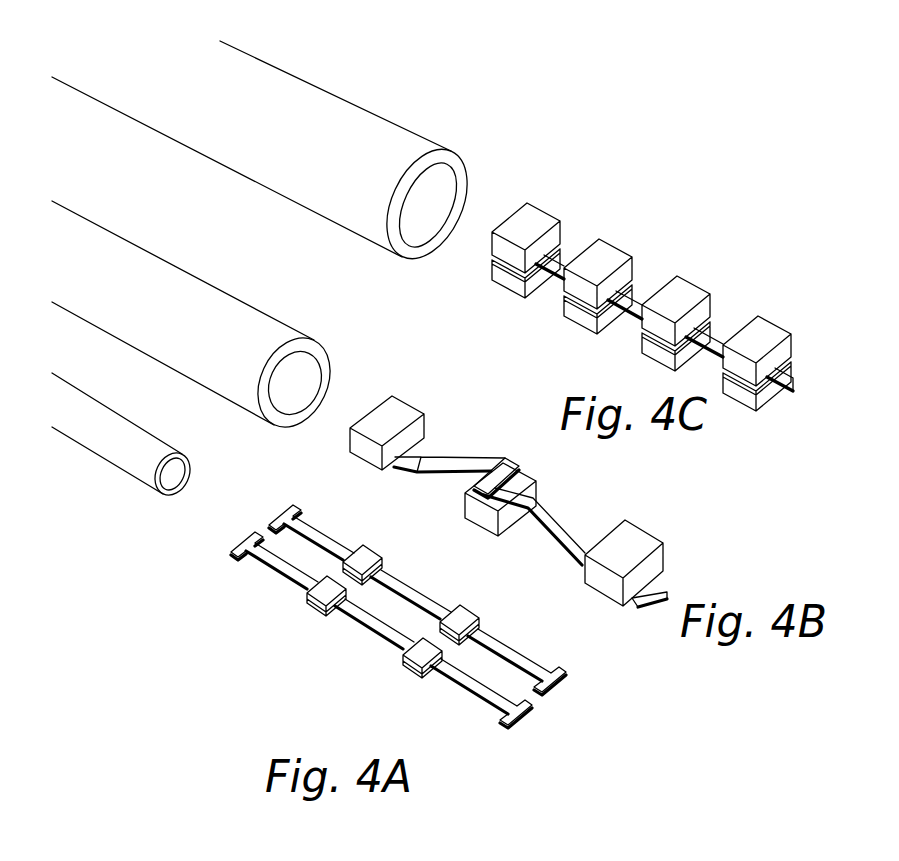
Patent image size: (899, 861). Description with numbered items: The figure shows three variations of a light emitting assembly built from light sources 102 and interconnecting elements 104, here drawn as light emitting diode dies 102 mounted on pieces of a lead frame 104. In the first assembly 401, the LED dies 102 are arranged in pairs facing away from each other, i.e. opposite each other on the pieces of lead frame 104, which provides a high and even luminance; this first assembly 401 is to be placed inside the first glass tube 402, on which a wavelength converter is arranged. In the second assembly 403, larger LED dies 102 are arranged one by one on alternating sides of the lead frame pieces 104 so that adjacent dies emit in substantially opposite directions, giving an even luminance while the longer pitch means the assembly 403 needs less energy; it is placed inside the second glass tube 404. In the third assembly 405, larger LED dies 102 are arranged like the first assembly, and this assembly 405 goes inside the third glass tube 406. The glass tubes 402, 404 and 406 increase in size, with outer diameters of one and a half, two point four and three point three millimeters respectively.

In FIG. 4A, the light sources 102 is at (317, 595).
In FIG. 4B, the light sources 102 is at (508, 533).
In FIG. 4C, the light sources 102 is at (778, 330).
In FIG. 4A, the interconnecting elements 104 is at (325, 538).
In FIG. 4B, the interconnecting elements 104 is at (453, 457).
In FIG. 4C, the interconnecting elements 104 is at (557, 262).
In FIG. 4A, the first assembly 401 is at (416, 655).
In FIG. 4A, the first glass tube 402 is at (155, 497).
In FIG. 4B, the second assembly 403 is at (521, 547).
In FIG. 4A, the second glass tube 404 is at (285, 428).
In FIG. 4C, the third assembly 405 is at (666, 356).
In FIG. 4A, the third glass tube 406 is at (463, 172).